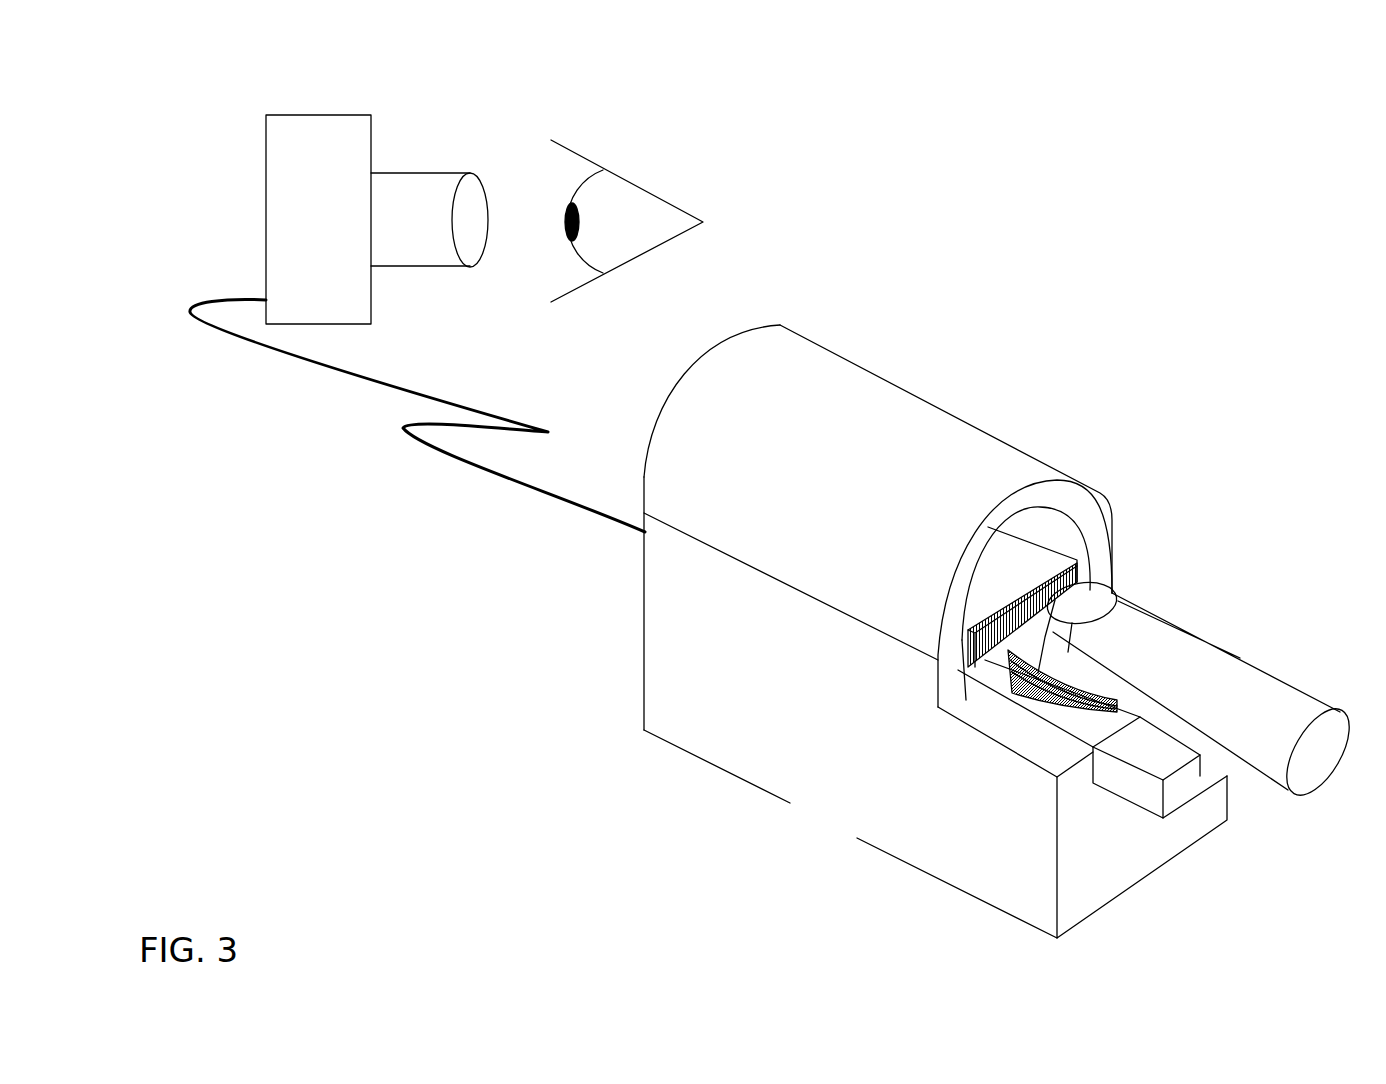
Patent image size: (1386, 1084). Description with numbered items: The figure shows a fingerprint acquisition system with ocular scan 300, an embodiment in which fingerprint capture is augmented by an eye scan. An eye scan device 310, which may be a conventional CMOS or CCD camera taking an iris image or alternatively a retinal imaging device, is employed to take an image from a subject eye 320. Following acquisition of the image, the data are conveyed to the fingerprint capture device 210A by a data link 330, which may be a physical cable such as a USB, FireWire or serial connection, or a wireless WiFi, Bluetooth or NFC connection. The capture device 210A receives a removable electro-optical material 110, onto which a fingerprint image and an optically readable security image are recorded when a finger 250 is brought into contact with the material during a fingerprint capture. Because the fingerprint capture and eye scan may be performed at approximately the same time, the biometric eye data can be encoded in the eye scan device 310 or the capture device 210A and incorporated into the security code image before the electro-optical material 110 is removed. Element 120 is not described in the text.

The fingerprint acquisition system with ocular scan 300 is at (1232, 174).
The eye scan device 310 is at (265, 208).
The subject eye 320 is at (650, 185).
The data link 330 is at (440, 463).
The fingerprint capture device 210A is at (638, 697).
The electro-optical material 110 is at (1067, 733).
The subject 120 is at (1020, 676).
The finger 250 is at (1260, 663).